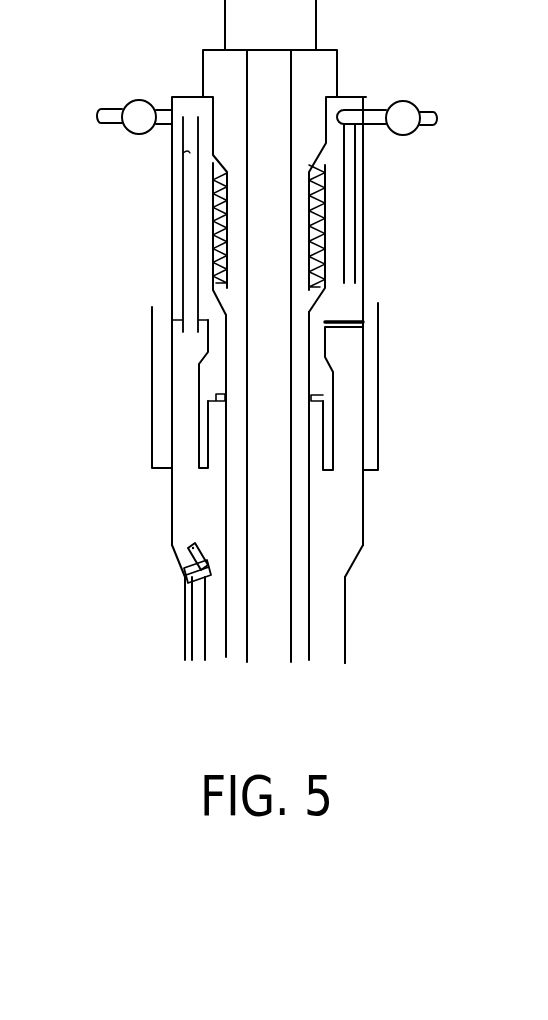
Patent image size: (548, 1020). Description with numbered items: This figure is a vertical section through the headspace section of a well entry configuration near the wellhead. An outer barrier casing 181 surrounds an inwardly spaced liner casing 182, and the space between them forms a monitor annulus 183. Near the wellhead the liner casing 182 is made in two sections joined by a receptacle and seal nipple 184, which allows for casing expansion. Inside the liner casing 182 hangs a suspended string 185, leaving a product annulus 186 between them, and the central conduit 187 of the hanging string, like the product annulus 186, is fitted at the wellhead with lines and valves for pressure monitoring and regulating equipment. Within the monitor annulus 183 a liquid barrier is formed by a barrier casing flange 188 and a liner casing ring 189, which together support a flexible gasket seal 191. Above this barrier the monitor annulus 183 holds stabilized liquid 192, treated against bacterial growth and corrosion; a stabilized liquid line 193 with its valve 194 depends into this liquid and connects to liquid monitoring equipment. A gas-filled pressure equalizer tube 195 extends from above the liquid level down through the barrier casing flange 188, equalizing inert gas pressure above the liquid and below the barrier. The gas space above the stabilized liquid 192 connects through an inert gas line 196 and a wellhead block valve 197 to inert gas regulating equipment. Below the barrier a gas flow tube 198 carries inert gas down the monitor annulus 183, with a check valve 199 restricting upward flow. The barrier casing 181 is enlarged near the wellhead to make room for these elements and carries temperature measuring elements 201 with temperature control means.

The barrier casing 181 is at (363, 542).
The liner casing 182 is at (308, 630).
The monitor annulus 183 is at (329, 558).
The receptacle and seal nipple 184 is at (315, 248).
The suspended string 185 is at (288, 662).
The product annulus 186 is at (237, 523).
The conduit 187 is at (267, 540).
The barrier casing flange 188 is at (345, 318).
The liner casing ring 189 is at (312, 403).
The flexible gasket seal 191 is at (328, 362).
The stabilized liquid 192 is at (213, 378).
The stabilized liquid line 193 is at (357, 152).
The valve 194 is at (403, 102).
The pressure equalizer tube 195 is at (190, 212).
The inert gas line 196 is at (163, 107).
The wellhead block valve 197 is at (120, 124).
The gas flow tube 198 is at (197, 637).
The check valve 199 is at (185, 578).
The temperature measuring elements 201 is at (152, 432).